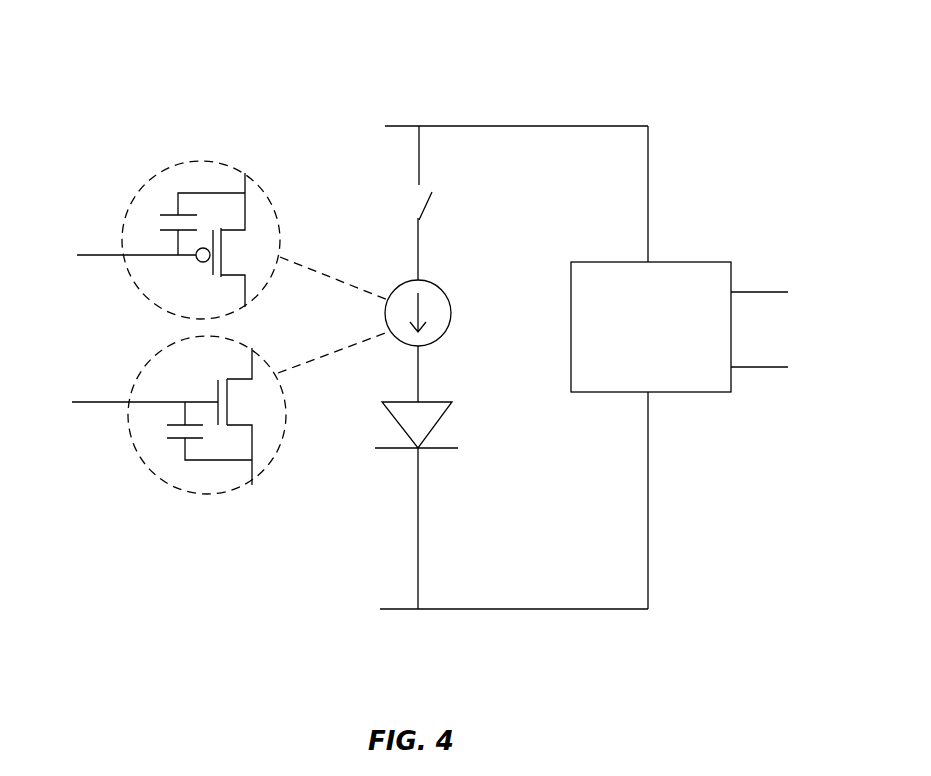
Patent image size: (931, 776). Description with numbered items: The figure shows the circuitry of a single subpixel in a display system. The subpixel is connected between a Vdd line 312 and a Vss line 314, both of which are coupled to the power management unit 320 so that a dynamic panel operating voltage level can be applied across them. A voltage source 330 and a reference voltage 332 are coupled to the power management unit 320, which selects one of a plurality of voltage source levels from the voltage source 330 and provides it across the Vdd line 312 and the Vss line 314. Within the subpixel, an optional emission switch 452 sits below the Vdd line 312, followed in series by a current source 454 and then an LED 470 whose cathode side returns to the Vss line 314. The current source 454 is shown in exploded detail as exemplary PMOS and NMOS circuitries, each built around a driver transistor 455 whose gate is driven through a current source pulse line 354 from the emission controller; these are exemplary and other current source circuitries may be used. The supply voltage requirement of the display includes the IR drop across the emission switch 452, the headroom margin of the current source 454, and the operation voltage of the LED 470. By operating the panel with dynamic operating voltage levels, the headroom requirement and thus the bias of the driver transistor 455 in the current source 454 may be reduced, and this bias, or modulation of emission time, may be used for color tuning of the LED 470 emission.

The Vdd input line 312 is at (482, 126).
The Vss input line 314 is at (477, 609).
The power management unit 320 is at (651, 367).
The voltage source 330 is at (798, 272).
The reference voltage 332 is at (787, 347).
The current source pulse line 354 is at (90, 254).
The emission switch 452 is at (484, 173).
The current source 454 is at (440, 282).
The driver transistor 455 is at (228, 252).
The LED 470 is at (444, 477).